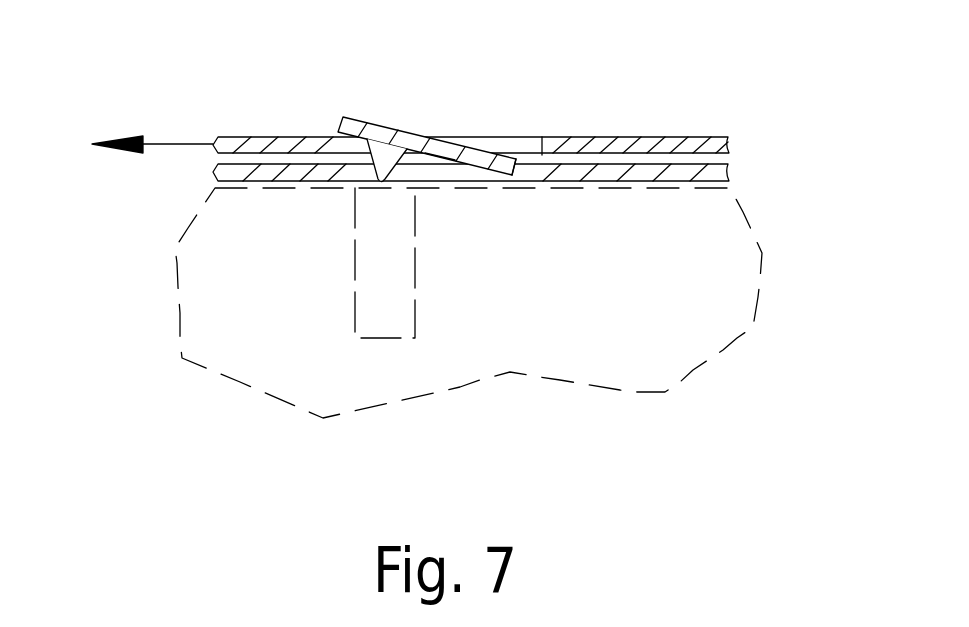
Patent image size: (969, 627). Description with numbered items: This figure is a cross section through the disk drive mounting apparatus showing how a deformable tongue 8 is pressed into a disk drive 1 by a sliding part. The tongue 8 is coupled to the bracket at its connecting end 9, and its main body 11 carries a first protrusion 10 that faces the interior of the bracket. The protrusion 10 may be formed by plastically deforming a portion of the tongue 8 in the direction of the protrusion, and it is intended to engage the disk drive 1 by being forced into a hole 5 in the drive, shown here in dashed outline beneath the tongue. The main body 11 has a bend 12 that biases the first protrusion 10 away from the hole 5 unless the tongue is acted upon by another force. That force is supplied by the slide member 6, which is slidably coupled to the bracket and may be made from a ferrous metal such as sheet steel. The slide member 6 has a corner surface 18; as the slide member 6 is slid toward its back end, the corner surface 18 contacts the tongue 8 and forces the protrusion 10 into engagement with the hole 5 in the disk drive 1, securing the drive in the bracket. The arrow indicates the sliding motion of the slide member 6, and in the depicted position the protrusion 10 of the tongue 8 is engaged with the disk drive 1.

The disk drive 1 is at (397, 400).
The hole 5 is at (385, 265).
The slide member 6 is at (587, 137).
The tongue 8 is at (448, 138).
The connecting end 9 is at (570, 182).
The first protrusion 10 is at (370, 161).
The main body 11 is at (440, 158).
The bend 12 is at (517, 182).
The corner surface 18 is at (541, 153).